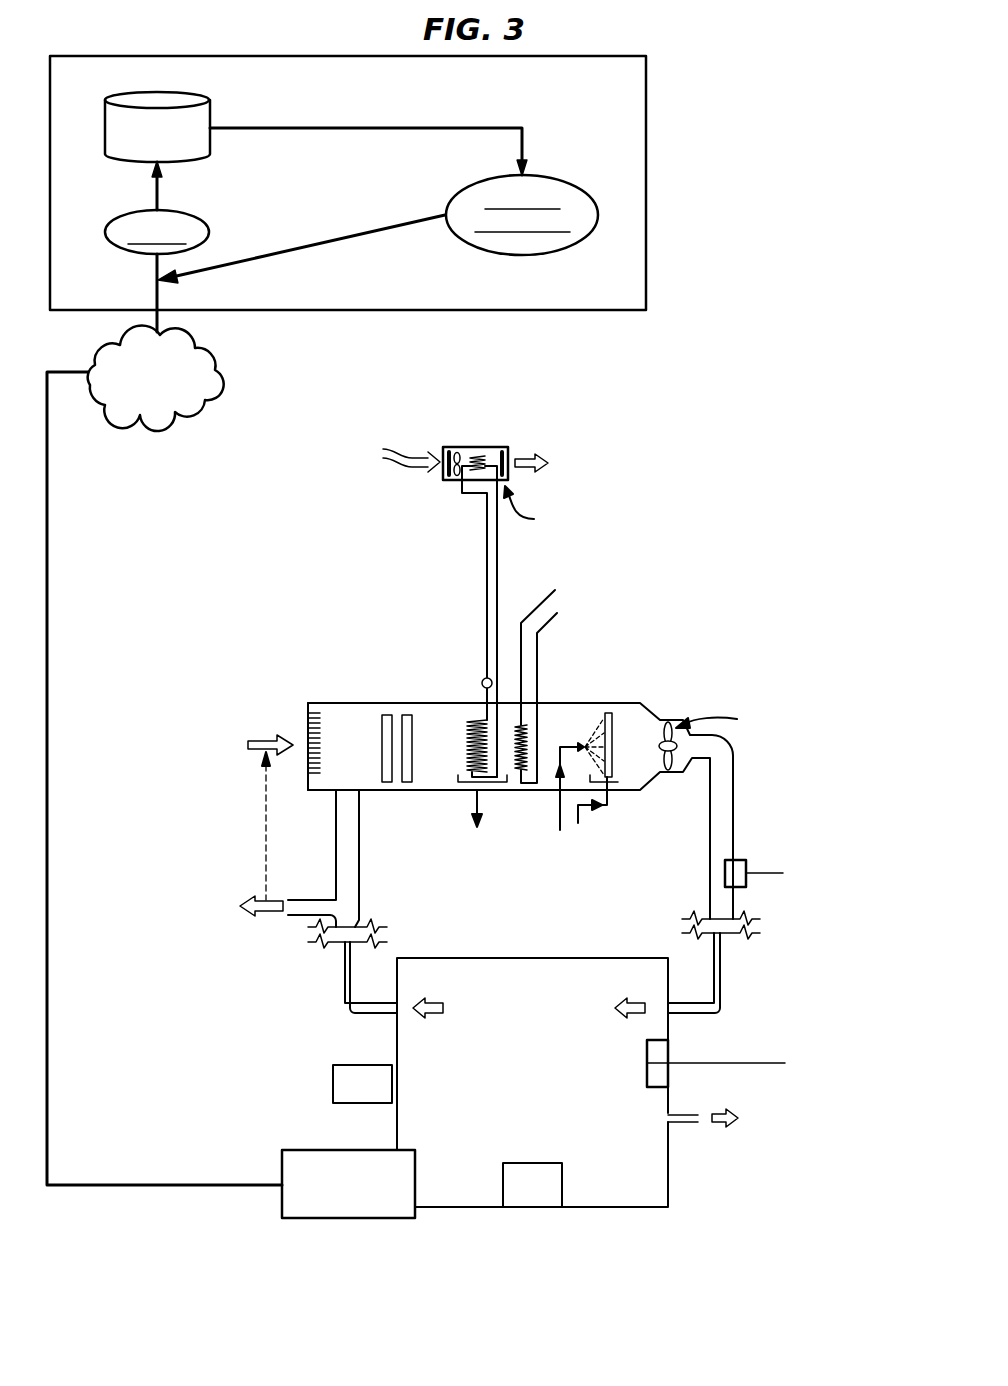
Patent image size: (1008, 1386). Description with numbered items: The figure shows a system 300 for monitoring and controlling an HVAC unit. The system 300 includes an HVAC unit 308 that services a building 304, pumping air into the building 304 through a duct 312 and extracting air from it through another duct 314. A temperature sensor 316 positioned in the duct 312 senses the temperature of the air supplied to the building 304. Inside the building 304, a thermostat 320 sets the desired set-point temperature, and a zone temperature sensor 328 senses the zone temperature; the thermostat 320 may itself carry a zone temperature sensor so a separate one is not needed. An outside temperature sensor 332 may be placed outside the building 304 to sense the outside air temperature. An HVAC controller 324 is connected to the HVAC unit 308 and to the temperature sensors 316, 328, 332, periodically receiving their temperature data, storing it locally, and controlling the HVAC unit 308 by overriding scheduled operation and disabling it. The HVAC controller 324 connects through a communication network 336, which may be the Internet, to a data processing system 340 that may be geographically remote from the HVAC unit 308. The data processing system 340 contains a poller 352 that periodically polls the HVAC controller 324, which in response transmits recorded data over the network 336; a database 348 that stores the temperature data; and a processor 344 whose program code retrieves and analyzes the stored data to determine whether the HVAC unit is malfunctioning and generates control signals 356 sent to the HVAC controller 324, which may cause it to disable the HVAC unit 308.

The system 300 is at (670, 413).
The building 304 is at (668, 1207).
The HVAC unit 308 is at (638, 762).
The duct 312 is at (735, 790).
The duct 314 is at (336, 874).
The temperature sensor 316 is at (747, 860).
The thermostat 320 is at (668, 1075).
The HVAC controller 324 is at (282, 1165).
The zone temperature sensor 328 is at (562, 1188).
The outside temperature sensor 332 is at (333, 1085).
The communication network 336 is at (220, 360).
The data processing system 340 is at (413, 91).
The processor 344 is at (583, 188).
The database 348 is at (212, 118).
The poller 352 is at (108, 226).
The control signals 356 is at (385, 228).